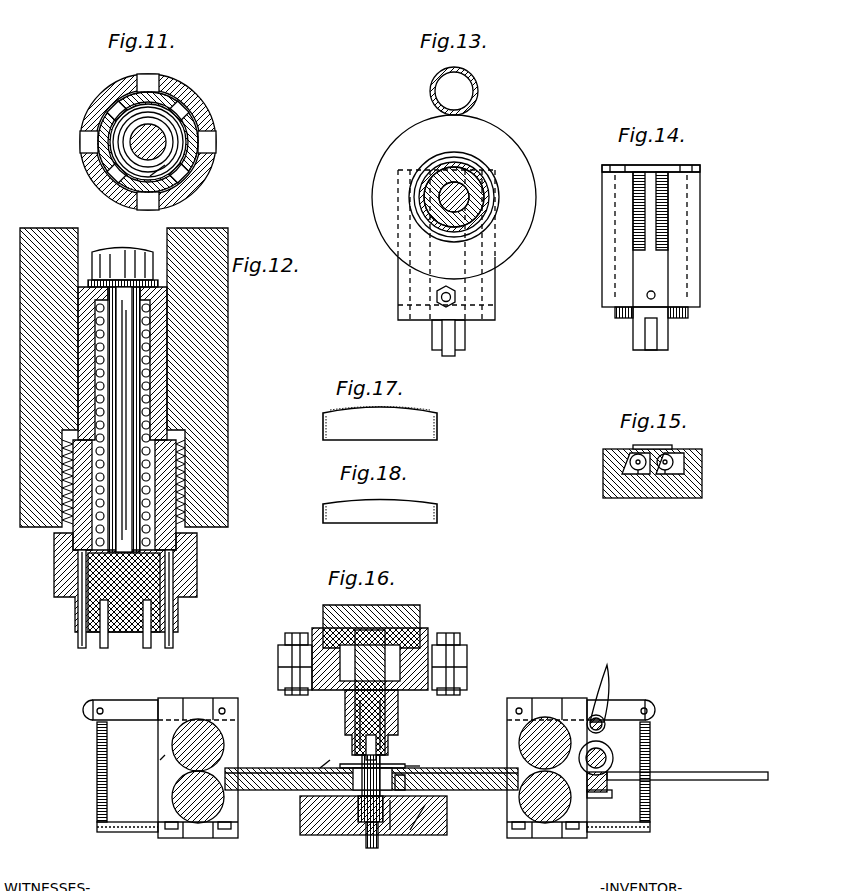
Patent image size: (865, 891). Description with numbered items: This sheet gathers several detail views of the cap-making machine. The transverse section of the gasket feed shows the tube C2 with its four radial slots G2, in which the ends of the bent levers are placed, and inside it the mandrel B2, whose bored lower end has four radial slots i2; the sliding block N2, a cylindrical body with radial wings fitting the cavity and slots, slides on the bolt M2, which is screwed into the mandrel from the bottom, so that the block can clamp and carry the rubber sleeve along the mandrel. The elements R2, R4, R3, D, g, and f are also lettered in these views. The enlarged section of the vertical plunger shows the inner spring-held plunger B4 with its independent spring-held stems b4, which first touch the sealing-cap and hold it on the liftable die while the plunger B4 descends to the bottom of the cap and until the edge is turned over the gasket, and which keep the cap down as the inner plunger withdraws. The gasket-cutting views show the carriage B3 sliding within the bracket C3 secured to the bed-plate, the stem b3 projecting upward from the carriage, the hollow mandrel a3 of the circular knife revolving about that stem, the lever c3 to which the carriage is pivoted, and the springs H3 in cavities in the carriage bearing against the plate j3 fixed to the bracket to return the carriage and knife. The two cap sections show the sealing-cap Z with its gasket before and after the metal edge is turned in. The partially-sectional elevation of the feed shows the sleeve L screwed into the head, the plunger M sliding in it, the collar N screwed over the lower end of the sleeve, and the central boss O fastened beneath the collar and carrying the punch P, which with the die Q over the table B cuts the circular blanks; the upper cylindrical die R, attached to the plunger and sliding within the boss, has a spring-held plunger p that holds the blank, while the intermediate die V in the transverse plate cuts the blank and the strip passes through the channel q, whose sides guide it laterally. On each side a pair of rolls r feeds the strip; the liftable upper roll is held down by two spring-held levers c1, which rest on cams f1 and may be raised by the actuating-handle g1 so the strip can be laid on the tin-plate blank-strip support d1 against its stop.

In FIG. 11, the tube C2 is at (176, 84).
In FIG. 13, the tube C2 is at (478, 93).
In FIG. 11, the mandrel B2 is at (205, 100).
In FIG. 11, the sliding block N2 is at (96, 160).
In FIG. 11, the roller R2 is at (188, 140).
In FIG. 11, the radial slots G2 is at (205, 156).
In FIG. 11, the radial slots i2 is at (200, 170).
In FIG. 11, the bolt M2 is at (190, 190).
In FIG. 12, the housing R4 is at (197, 580).
In FIG. 12, the inner spring-held plunger B4 is at (126, 633).
In FIG. 12, the spring-held stems b4 is at (174, 640).
In FIG. 13, the disk R3 is at (500, 203).
In FIG. 13, the carriage B3 is at (468, 328).
In FIG. 14, the carriage B3 is at (680, 320).
In FIG. 15, the carriage B3 is at (672, 452).
In FIG. 13, the lever c3 is at (448, 357).
In FIG. 14, the lever c3 is at (651, 352).
In FIG. 13, the stem b3 is at (450, 165).
In FIG. 13, the hollow mandrel a3 is at (470, 168).
In FIG. 14, the bracket C3 is at (700, 262).
In FIG. 15, the bracket C3 is at (703, 466).
In FIG. 14, the springs H3 is at (690, 172).
In FIG. 15, the springs H3 is at (648, 494).
In FIG. 14, the plate j3 is at (610, 168).
In FIG. 17, the sealing-cap Z is at (388, 424).
In FIG. 18, the sealing-cap Z is at (388, 512).
In FIG. 16, the plunger M is at (407, 603).
In FIG. 16, the sleeve L is at (422, 620).
In FIG. 16, the collar N is at (468, 664).
In FIG. 16, the central boss O is at (467, 678).
In FIG. 16, the stem D is at (400, 707).
In FIG. 16, the punch P is at (392, 752).
In FIG. 16, the spring-held plunger p is at (340, 764).
In FIG. 16, the die Q is at (408, 772).
In FIG. 16, the channel q is at (432, 740).
In FIG. 16, the upper cylindrical die R is at (335, 722).
In FIG. 16, the table B is at (300, 825).
In FIG. 16, the intermediate die V is at (355, 800).
In FIG. 16, the pin g is at (395, 810).
In FIG. 16, the pin f is at (447, 832).
In FIG. 16, the spring-held levers c1 is at (190, 716).
In FIG. 16, the rolls r is at (158, 772).
In FIG. 16, the cams f1 is at (605, 726).
In FIG. 16, the actuating-handle g1 is at (610, 686).
In FIG. 16, the tin-plate blank-strip support d1 is at (688, 772).